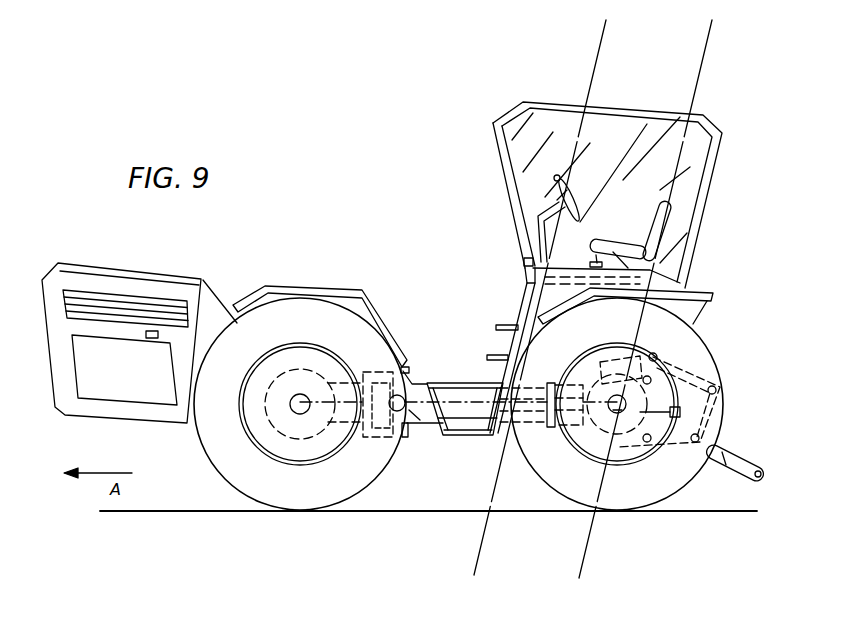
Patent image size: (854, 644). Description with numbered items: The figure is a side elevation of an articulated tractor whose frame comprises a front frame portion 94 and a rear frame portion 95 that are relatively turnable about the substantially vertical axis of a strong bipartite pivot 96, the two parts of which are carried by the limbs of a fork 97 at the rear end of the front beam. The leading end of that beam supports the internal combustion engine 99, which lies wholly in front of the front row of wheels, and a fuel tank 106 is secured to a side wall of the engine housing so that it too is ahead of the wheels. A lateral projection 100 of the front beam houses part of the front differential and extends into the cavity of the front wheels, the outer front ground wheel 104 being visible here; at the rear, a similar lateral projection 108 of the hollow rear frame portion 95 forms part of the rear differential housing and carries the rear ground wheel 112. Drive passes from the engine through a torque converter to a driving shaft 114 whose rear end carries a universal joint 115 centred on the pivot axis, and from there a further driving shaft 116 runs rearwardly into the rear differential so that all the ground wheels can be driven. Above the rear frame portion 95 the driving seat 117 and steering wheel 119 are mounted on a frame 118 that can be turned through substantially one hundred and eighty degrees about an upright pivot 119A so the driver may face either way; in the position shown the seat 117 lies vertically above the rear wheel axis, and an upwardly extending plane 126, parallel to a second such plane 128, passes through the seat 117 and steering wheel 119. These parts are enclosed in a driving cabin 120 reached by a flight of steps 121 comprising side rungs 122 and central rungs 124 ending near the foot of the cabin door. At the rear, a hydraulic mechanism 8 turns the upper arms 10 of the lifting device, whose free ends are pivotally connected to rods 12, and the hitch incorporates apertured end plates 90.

The hydraulic mechanism 8 is at (668, 350).
The upper arms 10 is at (707, 373).
The rods 12 is at (722, 410).
The apertured end plates 90 is at (736, 467).
The front frame portion 94 is at (214, 292).
The rear frame portion 95 is at (423, 381).
The strong bipartite pivot 96 is at (410, 371).
The fork 97 is at (383, 373).
The internal combustion engine 99 is at (105, 282).
The lateral projection 100 is at (295, 435).
The front ground wheel 104 is at (356, 492).
The fuel tank 106 is at (118, 398).
The lateral projection 108 is at (603, 466).
The rear ground wheel 112 is at (556, 489).
The driving shaft 114 is at (364, 430).
The universal joint 115 is at (411, 425).
The further driving shaft 116 is at (528, 430).
The driving seat 117 is at (610, 238).
The frame 118 is at (524, 262).
The steering wheel 119 is at (569, 186).
The upright pivot 119A is at (596, 262).
The driving cabin 120 is at (508, 146).
The flight of steps 121 is at (522, 302).
The rungs 122 is at (470, 437).
The further rungs 124 is at (503, 345).
The plane 126 is at (593, 50).
The reference plane 128 is at (700, 50).